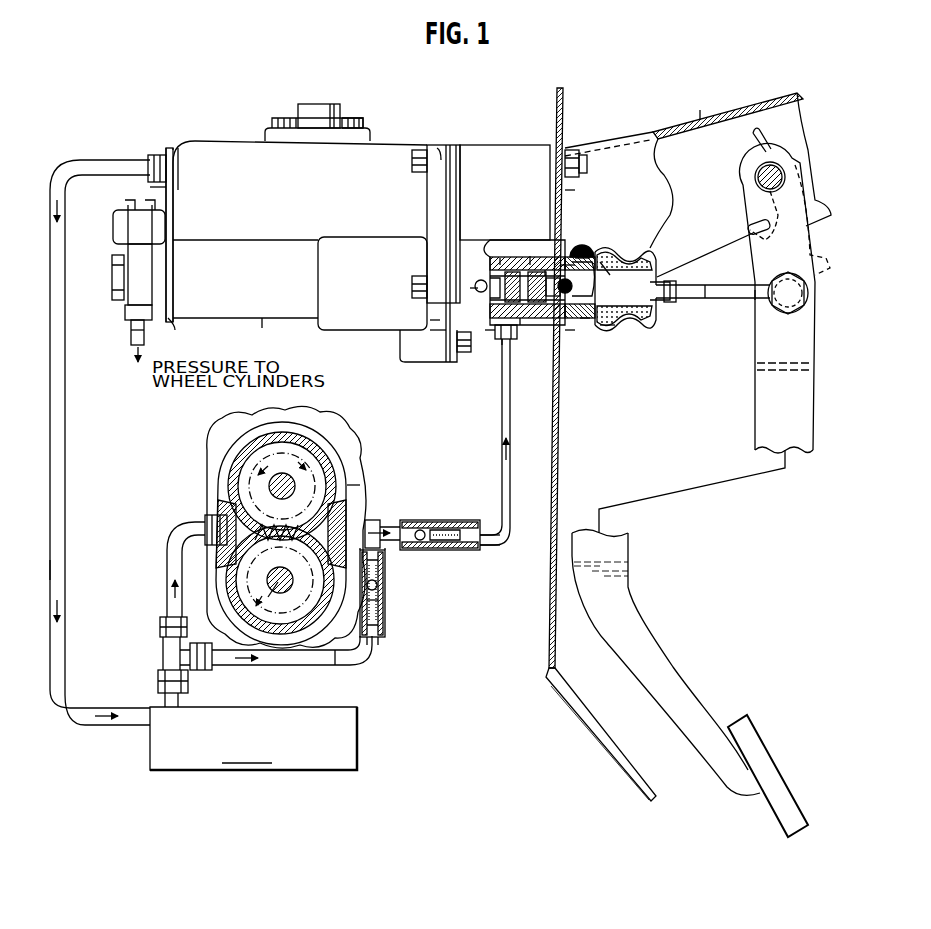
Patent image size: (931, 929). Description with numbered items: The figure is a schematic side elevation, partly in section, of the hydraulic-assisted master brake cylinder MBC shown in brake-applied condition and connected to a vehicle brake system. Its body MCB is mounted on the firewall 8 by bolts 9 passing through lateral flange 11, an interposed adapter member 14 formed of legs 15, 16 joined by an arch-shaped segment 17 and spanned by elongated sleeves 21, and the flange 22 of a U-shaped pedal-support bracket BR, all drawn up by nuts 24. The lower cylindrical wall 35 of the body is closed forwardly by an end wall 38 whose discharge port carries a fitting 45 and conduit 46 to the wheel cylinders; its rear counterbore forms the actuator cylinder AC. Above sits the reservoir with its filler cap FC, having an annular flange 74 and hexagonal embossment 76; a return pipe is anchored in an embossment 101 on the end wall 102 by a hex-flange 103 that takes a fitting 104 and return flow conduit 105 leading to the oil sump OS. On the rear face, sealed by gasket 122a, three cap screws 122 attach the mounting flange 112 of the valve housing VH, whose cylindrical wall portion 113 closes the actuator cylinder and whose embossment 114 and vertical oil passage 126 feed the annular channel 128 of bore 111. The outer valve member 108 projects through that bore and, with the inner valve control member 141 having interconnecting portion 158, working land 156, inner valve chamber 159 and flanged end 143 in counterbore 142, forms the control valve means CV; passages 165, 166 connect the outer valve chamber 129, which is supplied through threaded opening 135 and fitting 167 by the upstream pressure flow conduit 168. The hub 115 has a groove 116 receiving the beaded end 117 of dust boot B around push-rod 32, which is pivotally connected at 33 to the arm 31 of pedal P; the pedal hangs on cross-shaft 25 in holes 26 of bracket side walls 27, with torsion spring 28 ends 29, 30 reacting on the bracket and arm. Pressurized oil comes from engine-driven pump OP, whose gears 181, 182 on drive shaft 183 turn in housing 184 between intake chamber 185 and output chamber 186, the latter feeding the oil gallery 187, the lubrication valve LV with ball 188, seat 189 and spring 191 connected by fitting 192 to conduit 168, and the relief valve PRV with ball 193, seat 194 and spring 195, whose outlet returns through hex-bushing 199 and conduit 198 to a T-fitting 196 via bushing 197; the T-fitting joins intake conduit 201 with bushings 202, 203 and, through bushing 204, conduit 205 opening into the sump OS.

The master cylinder body MCB is at (252, 138).
The master brake cylinder MBC is at (205, 138).
The actuator cylinder AC is at (387, 299).
The filler cap FC is at (347, 106).
The exterior embossment 76 is at (316, 108).
The annular flange 74 is at (368, 124).
The embossment 101 is at (176, 147).
The end wall 102 is at (150, 187).
The hex-flange 103 is at (162, 156).
The hydraulic fitting 104 is at (148, 163).
The return flow conduit 105 is at (60, 574).
The hydraulic fitting 45 is at (140, 280).
The conduit 46 is at (132, 338).
The end wall 38 is at (180, 331).
The cylindrical wall 35 is at (263, 333).
The bolts 9 is at (410, 166).
The lateral flange 11 is at (428, 201).
The vertical end segment 15 is at (449, 144).
The arch-shaped segment 17 is at (472, 143).
The adapter member 14 is at (498, 143).
The gasket 122a is at (450, 162).
The valve housing VH is at (502, 252).
The control valve means CV is at (478, 255).
The embossment 114 is at (498, 256).
The outer valve chamber 129 is at (531, 254).
The control passages 166 is at (545, 268).
The interconnecting portion 158 is at (490, 284).
The valve control member 141 is at (544, 287).
The counterbore 142 is at (592, 265).
The hub 115 is at (578, 248).
The vertical oil passage 126 is at (570, 250).
The bore 111 is at (590, 255).
The outer valve member 108 is at (605, 262).
The lateral flange 22 is at (572, 199).
The dust boot B is at (645, 320).
The flanged outer end 143 is at (650, 303).
The annular groove 116 is at (612, 330).
The beaded forward end 117 is at (580, 325).
The working land 156 is at (572, 335).
The annular channel 128 is at (520, 328).
The interconnecting passages 165 is at (510, 340).
The hydraulic fitting 167 is at (502, 341).
The threaded opening 135 is at (490, 333).
The mounting flange 112 is at (460, 352).
The cap screws 122 is at (443, 335).
The cylindrical wall portion 113 is at (470, 315).
The inner valve chamber 159 is at (470, 296).
The elongated sleeves 21 is at (470, 292).
The vertical end segment 16 is at (557, 140).
The firewall 8 is at (575, 698).
The nuts 24 is at (582, 150).
The pedal-support bracket BR is at (698, 185).
The side walls 27 is at (690, 132).
The pedal P is at (752, 412).
The pedal arm 31 is at (810, 260).
The aligned holes 26 is at (757, 175).
The spring end 30 is at (770, 140).
The torsion spring 28 is at (810, 175).
The cross-shaft 25 is at (780, 205).
The spring end 29 is at (750, 228).
The push-rod 32 is at (760, 282).
The pivotal connection 33 is at (788, 306).
The oil pump OP is at (218, 478).
The gear 182 is at (305, 455).
The gear 181 is at (302, 645).
The intake chamber 185 is at (258, 530).
The pressure output chamber 186 is at (312, 545).
The drive shaft 183 is at (280, 582).
The pump housing 184 is at (362, 492).
The hex-bushing 202 is at (206, 528).
The intake conduit 201 is at (167, 547).
The hex-bushing 203 is at (160, 625).
The T-fitting 196 is at (163, 655).
The hex-bushing 204 is at (158, 683).
The conduit 205 is at (172, 700).
The hex-bushing 197 is at (203, 672).
The return flow conduit 198 is at (275, 665).
The spring 195 is at (348, 660).
The minimal pressure lubrication valve LV is at (442, 553).
The seat 189 is at (420, 528).
The check valve element 188 is at (448, 530).
The spring 191 is at (482, 534).
The hydraulic fitting 192 is at (484, 546).
The upstream pressure flow conduit 168 is at (512, 420).
The engine oil gallery 187 is at (348, 470).
The maximum pressure relief valve PRV is at (388, 620).
The seat 194 is at (380, 592).
The check-valve element 193 is at (384, 596).
The hex-bushing 199 is at (372, 645).
The oil sump OS is at (360, 738).